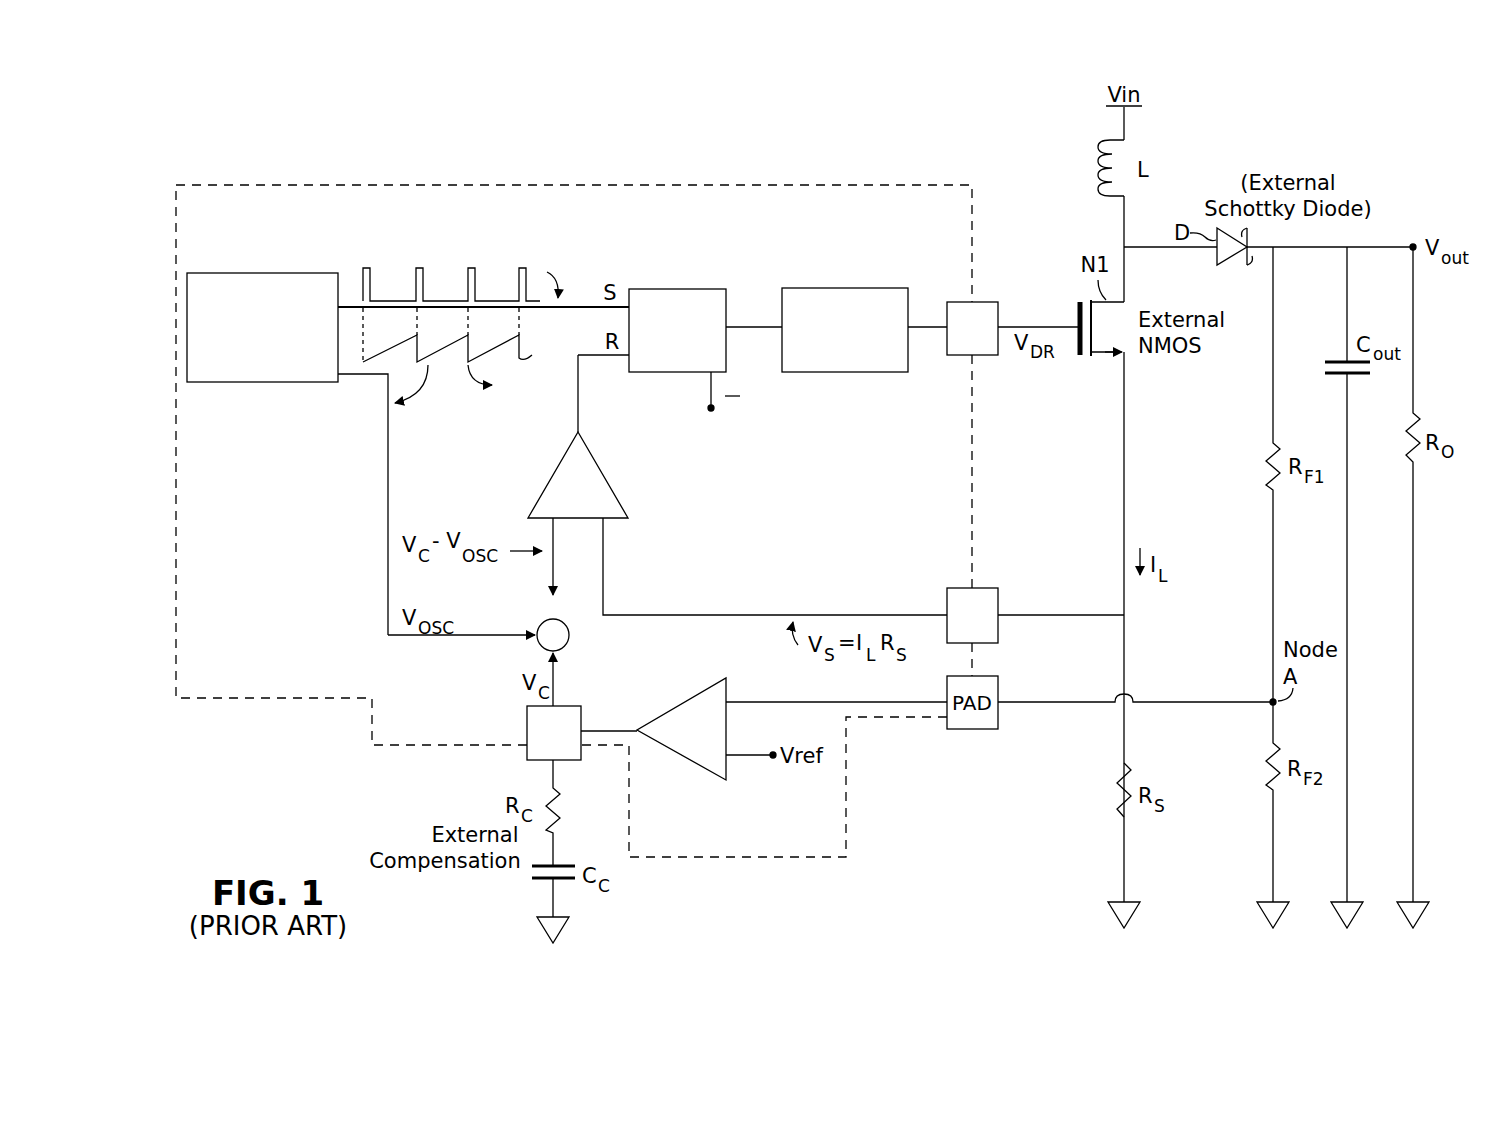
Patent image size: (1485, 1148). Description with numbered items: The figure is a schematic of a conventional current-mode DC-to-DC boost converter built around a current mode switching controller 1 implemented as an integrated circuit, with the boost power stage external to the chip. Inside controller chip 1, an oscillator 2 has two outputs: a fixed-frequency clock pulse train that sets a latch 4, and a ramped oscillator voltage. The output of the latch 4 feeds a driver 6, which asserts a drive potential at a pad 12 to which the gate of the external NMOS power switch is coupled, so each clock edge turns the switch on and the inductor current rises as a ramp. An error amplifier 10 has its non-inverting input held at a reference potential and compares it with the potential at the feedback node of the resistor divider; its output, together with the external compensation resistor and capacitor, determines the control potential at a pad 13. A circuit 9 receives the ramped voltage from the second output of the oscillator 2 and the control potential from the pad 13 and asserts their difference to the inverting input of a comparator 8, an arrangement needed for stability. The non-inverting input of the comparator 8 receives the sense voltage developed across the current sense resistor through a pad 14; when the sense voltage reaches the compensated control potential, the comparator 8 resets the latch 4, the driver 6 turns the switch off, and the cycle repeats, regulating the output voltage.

The current mode switching controller 1 is at (345, 185).
The oscillator 2 is at (281, 273).
The latch 4 is at (686, 289).
The driver 6 is at (853, 288).
The comparator 8 is at (617, 492).
The circuit 9 is at (566, 626).
The error amplifier 10 is at (688, 700).
The pad 12 is at (1000, 312).
The pad 13 is at (527, 724).
The pad 14 is at (1000, 600).